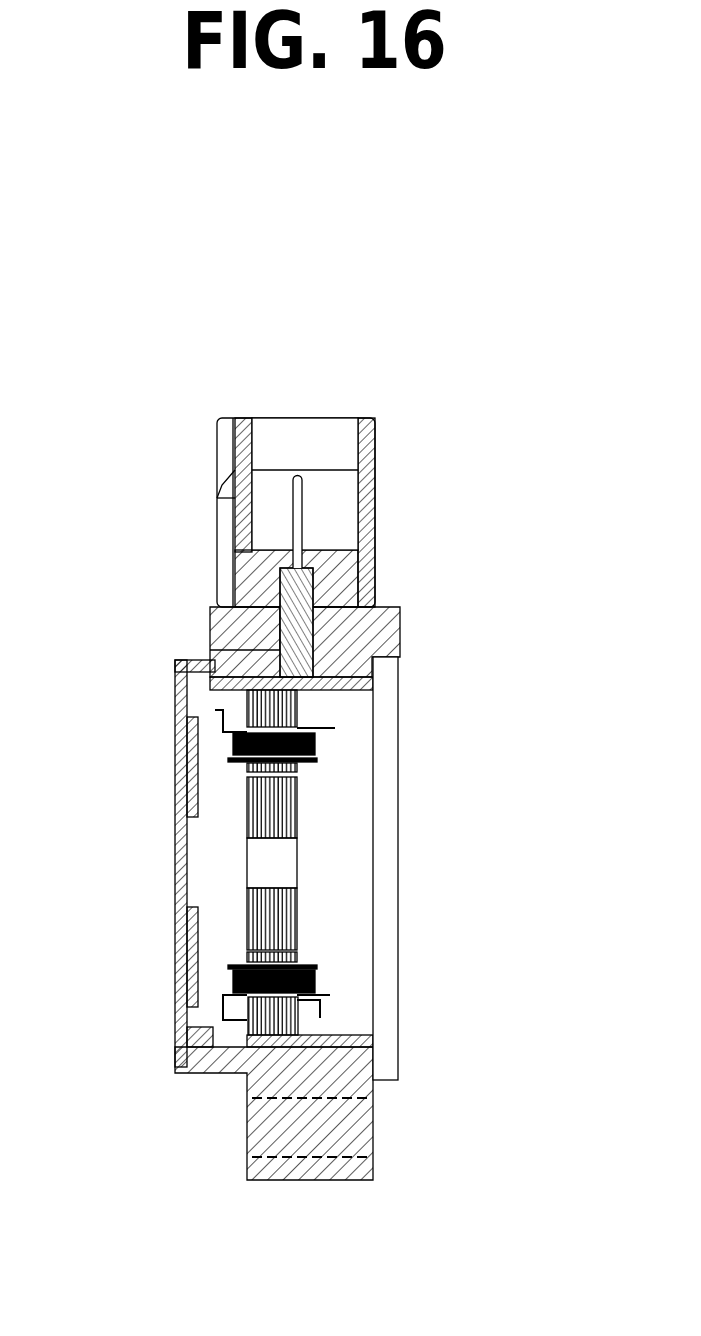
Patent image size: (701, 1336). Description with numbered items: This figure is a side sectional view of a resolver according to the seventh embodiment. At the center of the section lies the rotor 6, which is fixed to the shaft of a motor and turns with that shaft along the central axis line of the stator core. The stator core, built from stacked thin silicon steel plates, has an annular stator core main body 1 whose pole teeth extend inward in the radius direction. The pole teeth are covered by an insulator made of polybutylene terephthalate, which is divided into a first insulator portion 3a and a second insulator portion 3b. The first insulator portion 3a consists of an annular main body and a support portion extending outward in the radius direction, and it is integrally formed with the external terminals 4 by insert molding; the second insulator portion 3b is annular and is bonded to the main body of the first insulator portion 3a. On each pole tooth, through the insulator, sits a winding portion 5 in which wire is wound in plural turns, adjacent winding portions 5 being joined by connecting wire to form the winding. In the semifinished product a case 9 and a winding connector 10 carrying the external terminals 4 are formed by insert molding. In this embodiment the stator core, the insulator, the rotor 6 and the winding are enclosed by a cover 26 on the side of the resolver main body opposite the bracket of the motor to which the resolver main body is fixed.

The stator core main body 1 is at (310, 1020).
The first insulator portion 3a is at (210, 645).
The second insulator portion 3b is at (300, 713).
The external terminals 4 is at (310, 500).
The winding portion 5 is at (312, 742).
The rotor 6 is at (300, 800).
The case 9 is at (210, 628).
The winding connector 10 is at (378, 552).
The cover 26 is at (177, 873).